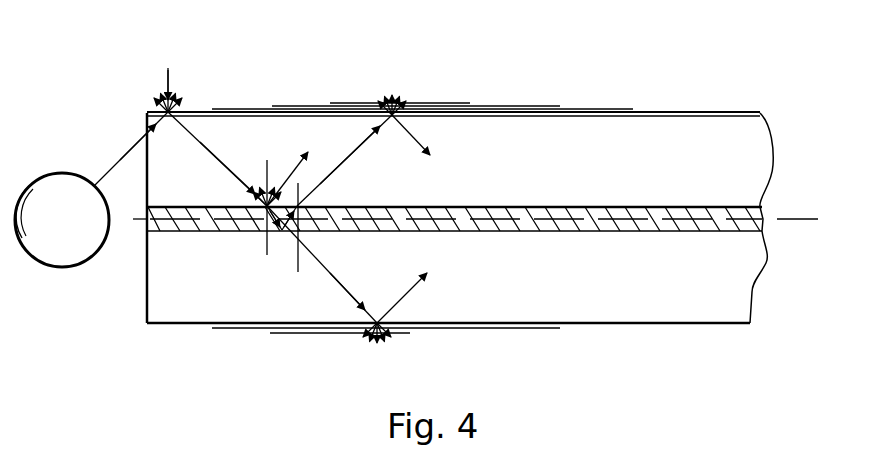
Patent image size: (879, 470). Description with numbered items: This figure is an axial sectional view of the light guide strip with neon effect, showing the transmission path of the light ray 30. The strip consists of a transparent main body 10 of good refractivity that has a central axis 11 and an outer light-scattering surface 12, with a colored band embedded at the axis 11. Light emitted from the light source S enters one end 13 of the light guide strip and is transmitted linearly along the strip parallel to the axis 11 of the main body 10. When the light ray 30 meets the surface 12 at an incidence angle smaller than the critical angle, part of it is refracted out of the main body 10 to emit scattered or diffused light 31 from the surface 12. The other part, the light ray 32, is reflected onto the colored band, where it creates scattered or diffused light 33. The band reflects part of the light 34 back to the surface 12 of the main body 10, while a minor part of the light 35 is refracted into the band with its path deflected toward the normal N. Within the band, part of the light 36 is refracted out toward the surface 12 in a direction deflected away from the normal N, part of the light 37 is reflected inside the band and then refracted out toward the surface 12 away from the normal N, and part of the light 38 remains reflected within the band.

The main body 10 is at (670, 112).
The central axis 11 is at (797, 219).
The light-scattering surface 12 is at (595, 108).
The end of the light guide strip 13 is at (147, 288).
The light ray 30 is at (91, 189).
The scattered or diffused light 31 is at (163, 104).
The reflected light ray 32 is at (217, 156).
The scattered or diffused light 33 is at (256, 198).
The light reflected by color band 34 is at (290, 195).
The light refracted into color band 35 is at (265, 238).
The light refracted out of color band 36 is at (345, 295).
The light reflected within and refracted out of color band 37 is at (333, 172).
The light reflected within color band 38 is at (292, 212).